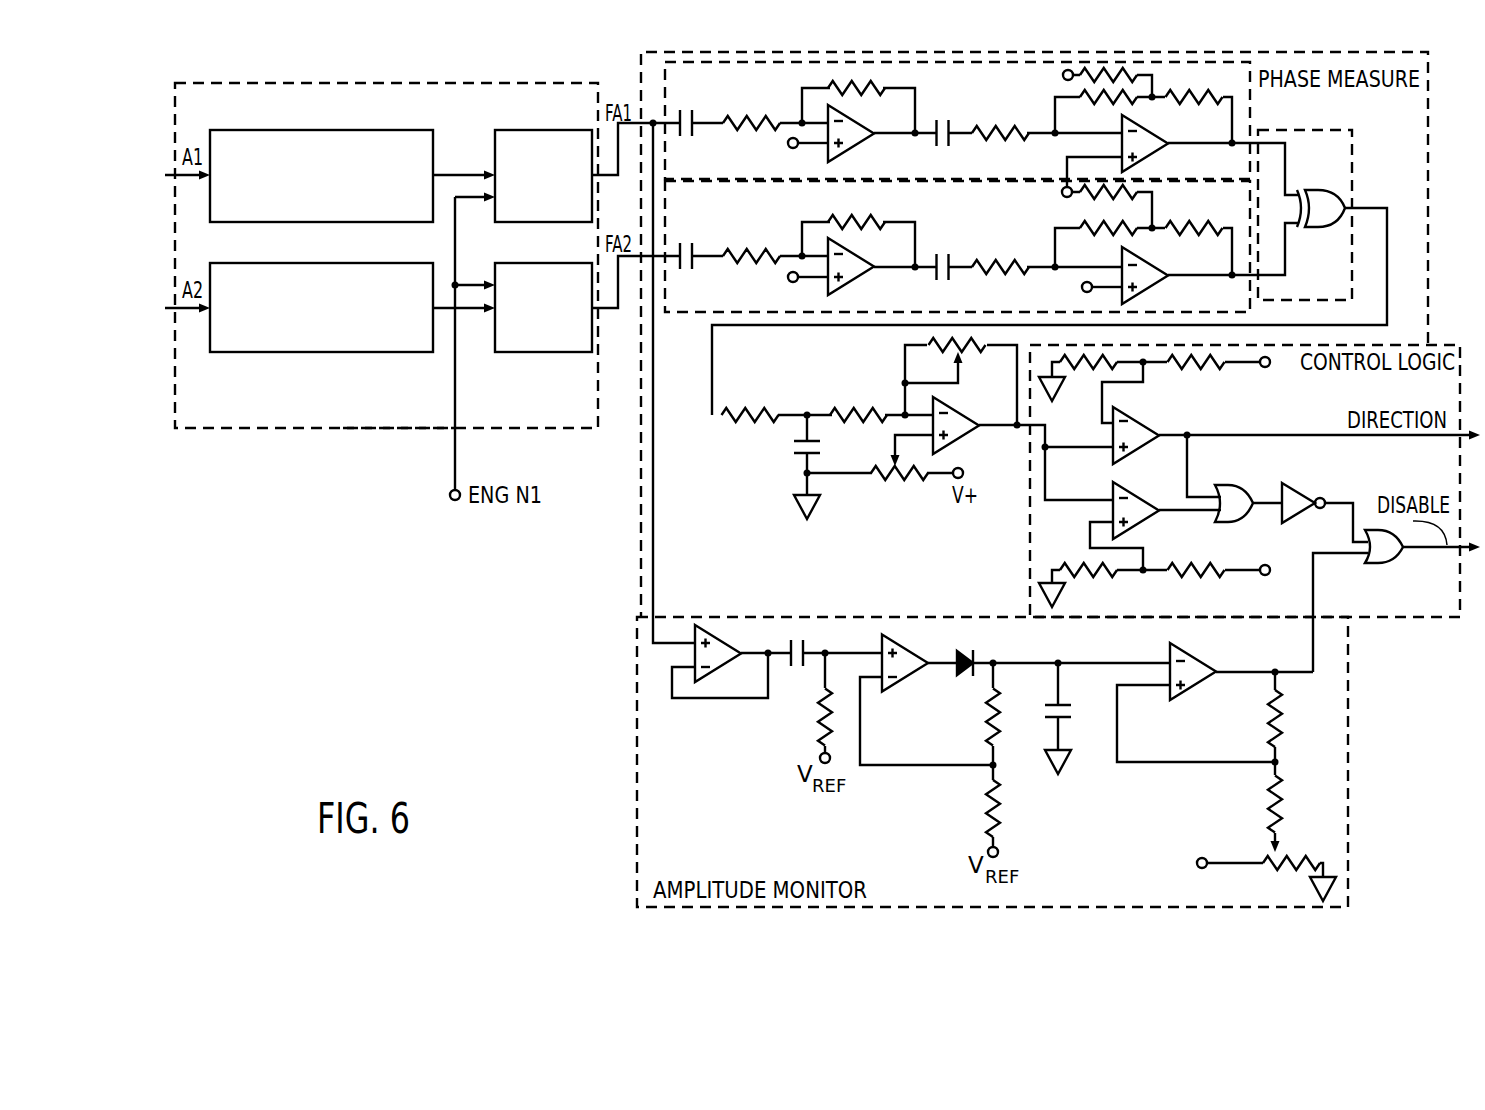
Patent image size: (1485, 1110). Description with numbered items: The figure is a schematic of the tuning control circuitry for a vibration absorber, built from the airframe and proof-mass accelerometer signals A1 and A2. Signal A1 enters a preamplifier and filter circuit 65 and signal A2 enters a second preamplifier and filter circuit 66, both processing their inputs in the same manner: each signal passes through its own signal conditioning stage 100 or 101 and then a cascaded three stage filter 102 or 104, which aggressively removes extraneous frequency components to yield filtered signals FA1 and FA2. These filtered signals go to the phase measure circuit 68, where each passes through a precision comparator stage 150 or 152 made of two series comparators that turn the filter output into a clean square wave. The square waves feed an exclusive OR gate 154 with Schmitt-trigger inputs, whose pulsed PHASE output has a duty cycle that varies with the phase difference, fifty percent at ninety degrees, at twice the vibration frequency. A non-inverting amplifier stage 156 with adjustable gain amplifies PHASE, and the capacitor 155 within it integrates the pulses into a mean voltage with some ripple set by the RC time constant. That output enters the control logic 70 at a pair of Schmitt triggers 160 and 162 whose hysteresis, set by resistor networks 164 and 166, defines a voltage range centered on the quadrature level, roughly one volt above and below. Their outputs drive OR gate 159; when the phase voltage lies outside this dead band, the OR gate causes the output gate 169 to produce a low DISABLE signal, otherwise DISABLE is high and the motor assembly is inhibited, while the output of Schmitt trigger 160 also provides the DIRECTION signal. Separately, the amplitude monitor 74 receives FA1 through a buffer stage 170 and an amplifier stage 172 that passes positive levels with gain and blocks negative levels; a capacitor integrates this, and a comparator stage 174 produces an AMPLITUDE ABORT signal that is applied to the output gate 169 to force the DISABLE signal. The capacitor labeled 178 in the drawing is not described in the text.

The preamplifier and filter circuit 65 is at (600, 85).
The preamplifier and filter circuit 66 is at (343, 428).
The phase measure circuit 68 is at (1428, 243).
The control logic 70 is at (1440, 345).
The amplitude monitor 74 is at (1350, 800).
The signal conditioning stage 100 is at (342, 130).
The signal conditioning stage 101 is at (330, 263).
The three stage filter 102 is at (548, 130).
The three stage filter 104 is at (548, 263).
The precision comparator stage 150 is at (666, 91).
The precision comparator stage 152 is at (666, 215).
The exclusive OR gate 154 is at (1352, 155).
The capacitor 155 is at (800, 455).
The non-inverting amplifier stage 156 is at (760, 444).
The OR gate 159 is at (1220, 518).
The Schmitt trigger 160 is at (1108, 455).
The Schmitt trigger 162 is at (1122, 488).
The resistor network 164 is at (1222, 365).
The resistor network 166 is at (1205, 580).
The output gate 169 is at (1378, 562).
The buffer stage 170 is at (736, 720).
The amplifier stage 172 is at (985, 642).
The comparator stage 174 is at (1148, 795).
The capacitor 178 is at (1048, 708).